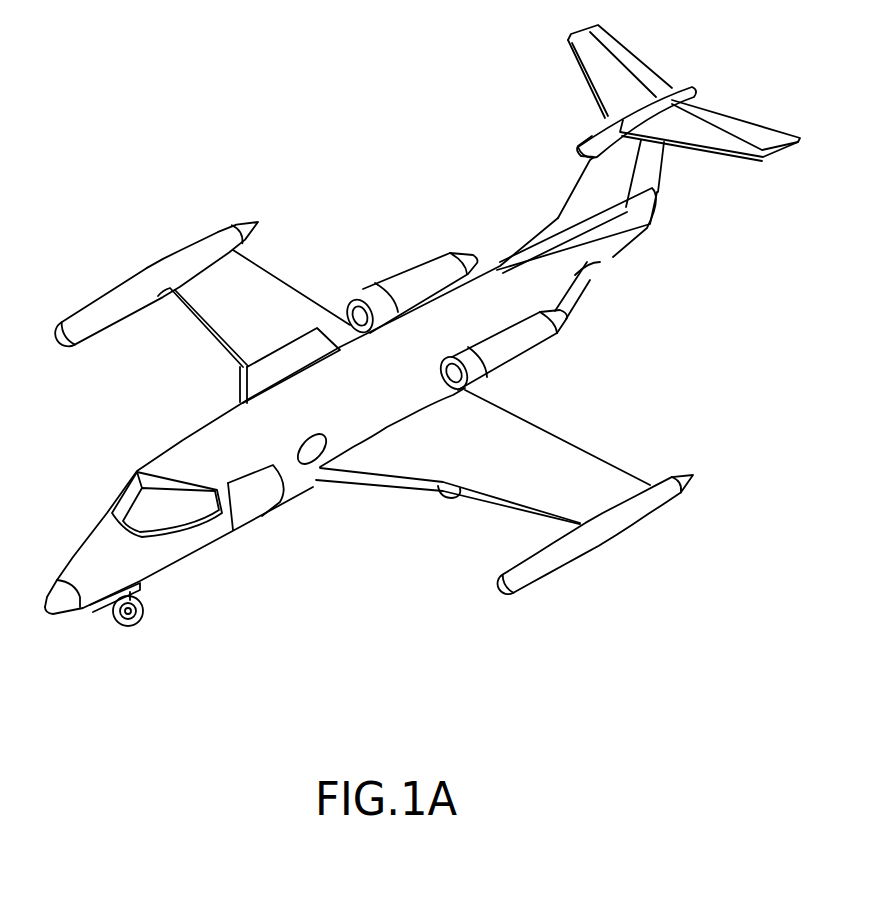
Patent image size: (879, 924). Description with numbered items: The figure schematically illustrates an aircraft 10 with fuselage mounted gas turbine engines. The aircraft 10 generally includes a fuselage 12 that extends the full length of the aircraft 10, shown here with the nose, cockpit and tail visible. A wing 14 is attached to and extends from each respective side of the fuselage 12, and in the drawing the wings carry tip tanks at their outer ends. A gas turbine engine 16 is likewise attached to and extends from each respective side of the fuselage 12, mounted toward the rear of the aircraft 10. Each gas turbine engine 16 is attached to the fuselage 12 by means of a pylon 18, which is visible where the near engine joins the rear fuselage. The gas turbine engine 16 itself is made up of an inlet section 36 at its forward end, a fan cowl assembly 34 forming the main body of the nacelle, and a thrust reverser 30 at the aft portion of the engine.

The aircraft 10 is at (243, 134).
The fuselage 12 is at (480, 307).
The wing 14 is at (583, 472).
The gas turbine engine 16 is at (394, 252).
The pylon 18 is at (566, 296).
The thrust reverser 30 is at (557, 322).
The fan cowl assembly 34 is at (517, 347).
The inlet section 36 is at (476, 385).